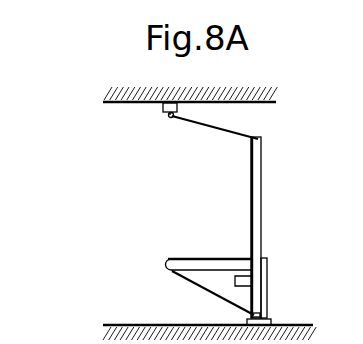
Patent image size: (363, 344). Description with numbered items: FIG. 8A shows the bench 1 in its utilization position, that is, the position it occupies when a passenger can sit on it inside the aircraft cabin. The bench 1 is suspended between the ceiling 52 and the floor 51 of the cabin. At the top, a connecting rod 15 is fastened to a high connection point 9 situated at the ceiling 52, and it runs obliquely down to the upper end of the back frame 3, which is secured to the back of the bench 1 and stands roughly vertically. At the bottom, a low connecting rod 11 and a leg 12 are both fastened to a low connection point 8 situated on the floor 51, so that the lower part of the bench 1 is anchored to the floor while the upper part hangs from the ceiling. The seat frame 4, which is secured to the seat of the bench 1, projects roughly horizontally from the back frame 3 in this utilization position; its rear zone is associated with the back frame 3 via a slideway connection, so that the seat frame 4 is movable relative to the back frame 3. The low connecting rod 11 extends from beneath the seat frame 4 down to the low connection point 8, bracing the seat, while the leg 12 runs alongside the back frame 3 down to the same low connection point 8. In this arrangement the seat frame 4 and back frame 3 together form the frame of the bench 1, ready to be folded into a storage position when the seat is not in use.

The bench 1 is at (287, 185).
The back frame 3 is at (251, 235).
The seat frame 4 is at (182, 260).
The low connection point 8 is at (270, 320).
The high connection point 9 is at (170, 117).
The low connecting rod 11 is at (207, 295).
The leg 12 is at (268, 277).
The connecting rod 15 is at (227, 132).
The floor 51 is at (110, 324).
The ceiling 52 is at (114, 97).